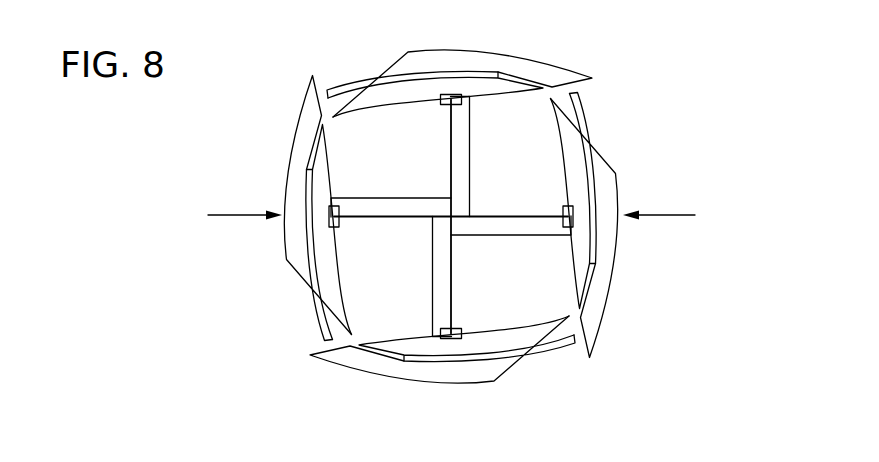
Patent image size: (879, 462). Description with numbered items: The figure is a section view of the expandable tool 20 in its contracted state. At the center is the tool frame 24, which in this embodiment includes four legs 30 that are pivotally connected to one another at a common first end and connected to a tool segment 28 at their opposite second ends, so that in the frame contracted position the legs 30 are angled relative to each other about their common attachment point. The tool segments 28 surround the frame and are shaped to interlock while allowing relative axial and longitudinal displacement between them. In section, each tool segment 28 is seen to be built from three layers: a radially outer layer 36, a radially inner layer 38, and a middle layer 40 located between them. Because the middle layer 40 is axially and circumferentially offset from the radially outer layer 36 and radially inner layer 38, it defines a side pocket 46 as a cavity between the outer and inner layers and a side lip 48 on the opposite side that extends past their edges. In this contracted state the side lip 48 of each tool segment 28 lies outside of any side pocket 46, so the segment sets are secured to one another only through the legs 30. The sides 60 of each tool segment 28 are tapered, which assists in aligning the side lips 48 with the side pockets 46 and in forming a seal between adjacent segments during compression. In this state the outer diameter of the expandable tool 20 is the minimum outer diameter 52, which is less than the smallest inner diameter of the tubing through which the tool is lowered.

The expandable tool 20 is at (672, 51).
The tool frame 24 is at (553, 237).
The tool segments 28 is at (528, 68).
The legs 30 is at (448, 167).
The radially outer layer 36 is at (365, 365).
The radially inner layer 38 is at (317, 303).
The middle layer 40 is at (373, 97).
The side pocket 46 is at (588, 288).
The side lip 48 is at (548, 350).
The minimum outer diameter 52 is at (230, 213).
The sides 60 is at (605, 167).